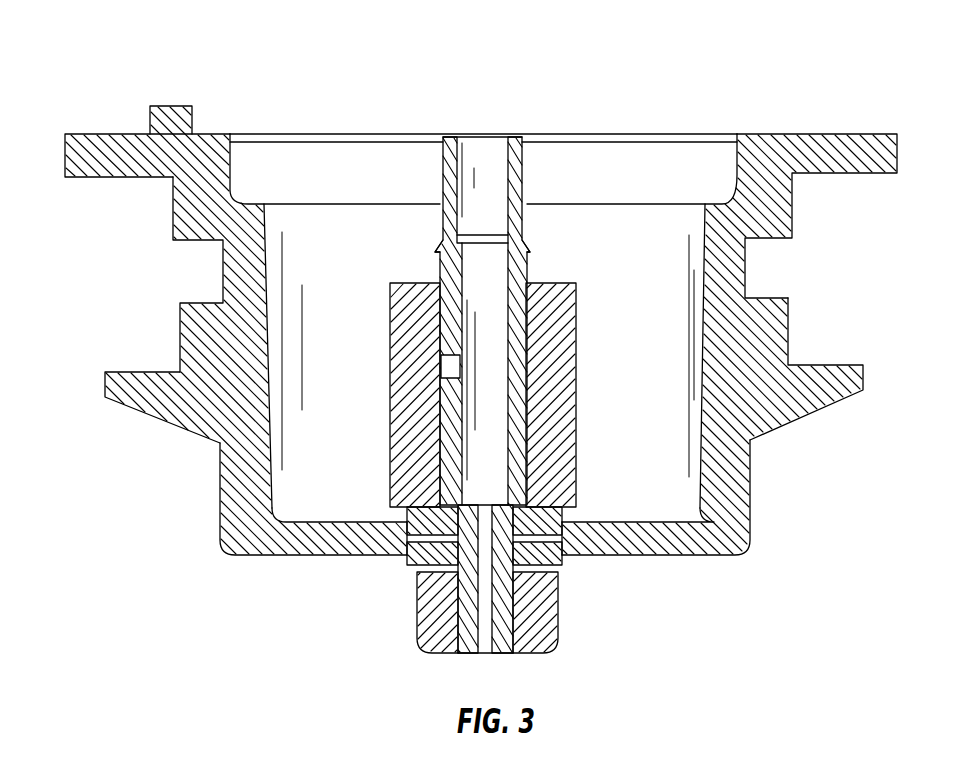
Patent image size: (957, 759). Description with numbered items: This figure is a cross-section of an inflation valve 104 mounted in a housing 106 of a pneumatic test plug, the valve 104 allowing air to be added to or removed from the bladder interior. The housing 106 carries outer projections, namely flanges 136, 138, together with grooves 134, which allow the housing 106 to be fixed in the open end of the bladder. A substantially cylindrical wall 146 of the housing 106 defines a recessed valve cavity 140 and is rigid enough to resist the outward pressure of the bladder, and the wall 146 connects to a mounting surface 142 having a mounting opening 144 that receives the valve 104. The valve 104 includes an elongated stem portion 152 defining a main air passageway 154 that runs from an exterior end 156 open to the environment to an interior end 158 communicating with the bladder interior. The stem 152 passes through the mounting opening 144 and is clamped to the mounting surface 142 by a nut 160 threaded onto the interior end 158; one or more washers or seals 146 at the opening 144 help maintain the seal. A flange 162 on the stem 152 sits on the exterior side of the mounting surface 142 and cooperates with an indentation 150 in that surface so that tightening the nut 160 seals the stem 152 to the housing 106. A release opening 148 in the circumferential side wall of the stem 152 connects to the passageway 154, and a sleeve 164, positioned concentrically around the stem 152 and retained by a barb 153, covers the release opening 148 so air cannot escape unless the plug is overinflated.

The inflation valve 104 is at (432, 184).
The housing 106 is at (172, 103).
The grooves 134 is at (222, 268).
The flange 136 is at (80, 152).
The flange 138 is at (105, 384).
The recessed valve cavity 140 is at (341, 253).
The mounting surface 142 is at (663, 541).
The mounting opening 144 is at (557, 562).
The wall 146 is at (727, 472).
The release opening 148 is at (448, 368).
The indentation 150 is at (407, 527).
The stem portion 152 is at (520, 210).
The barb 153 is at (530, 248).
The main air passageway 154 is at (487, 298).
The exterior end 156 is at (482, 135).
The interior end 158 is at (487, 655).
The nut 160 is at (557, 627).
The flange 162 is at (410, 512).
The sleeve 164 is at (565, 363).